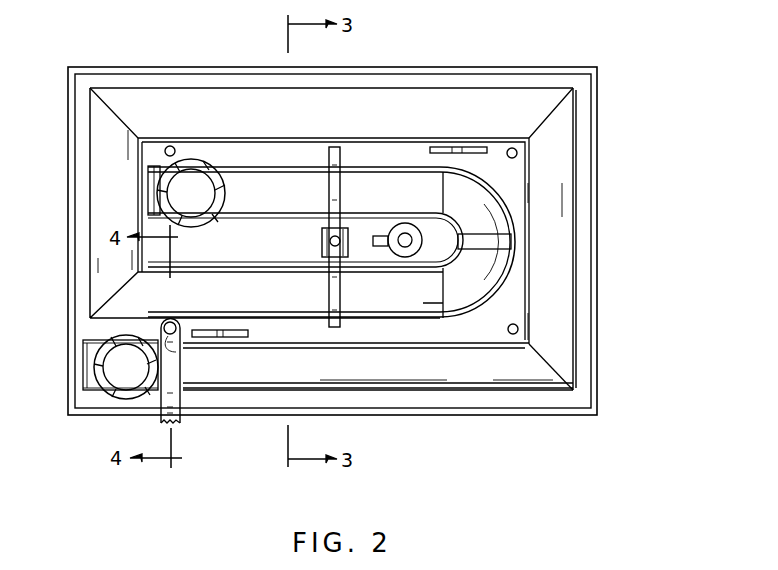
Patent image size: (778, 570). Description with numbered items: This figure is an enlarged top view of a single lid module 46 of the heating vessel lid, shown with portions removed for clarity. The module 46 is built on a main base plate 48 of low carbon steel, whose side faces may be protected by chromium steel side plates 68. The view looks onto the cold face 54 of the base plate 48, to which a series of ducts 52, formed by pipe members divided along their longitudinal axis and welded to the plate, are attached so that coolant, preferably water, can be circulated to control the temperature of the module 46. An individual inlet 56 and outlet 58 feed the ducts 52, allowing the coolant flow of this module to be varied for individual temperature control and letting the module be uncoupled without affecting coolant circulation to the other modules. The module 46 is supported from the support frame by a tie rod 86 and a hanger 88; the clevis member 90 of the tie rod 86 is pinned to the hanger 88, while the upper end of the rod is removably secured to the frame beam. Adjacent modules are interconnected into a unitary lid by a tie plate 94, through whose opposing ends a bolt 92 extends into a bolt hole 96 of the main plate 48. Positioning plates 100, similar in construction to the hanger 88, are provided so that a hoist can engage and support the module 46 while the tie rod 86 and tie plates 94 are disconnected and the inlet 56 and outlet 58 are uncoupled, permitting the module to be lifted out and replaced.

The lid module 46 is at (580, 58).
The main base plate 48 is at (585, 139).
The ducts 52 is at (363, 318).
The cold face 54 is at (457, 82).
The inlet 56 is at (190, 228).
The outlet 58 is at (107, 396).
The side plates 68 is at (598, 280).
The tie rod 86 is at (322, 239).
The hanger 88 is at (328, 191).
The clevis member 90 is at (350, 229).
The bolt 92 is at (176, 345).
The tie plate 94 is at (180, 420).
The bolt hole 96 is at (173, 146).
The positioning plates 100 is at (450, 147).